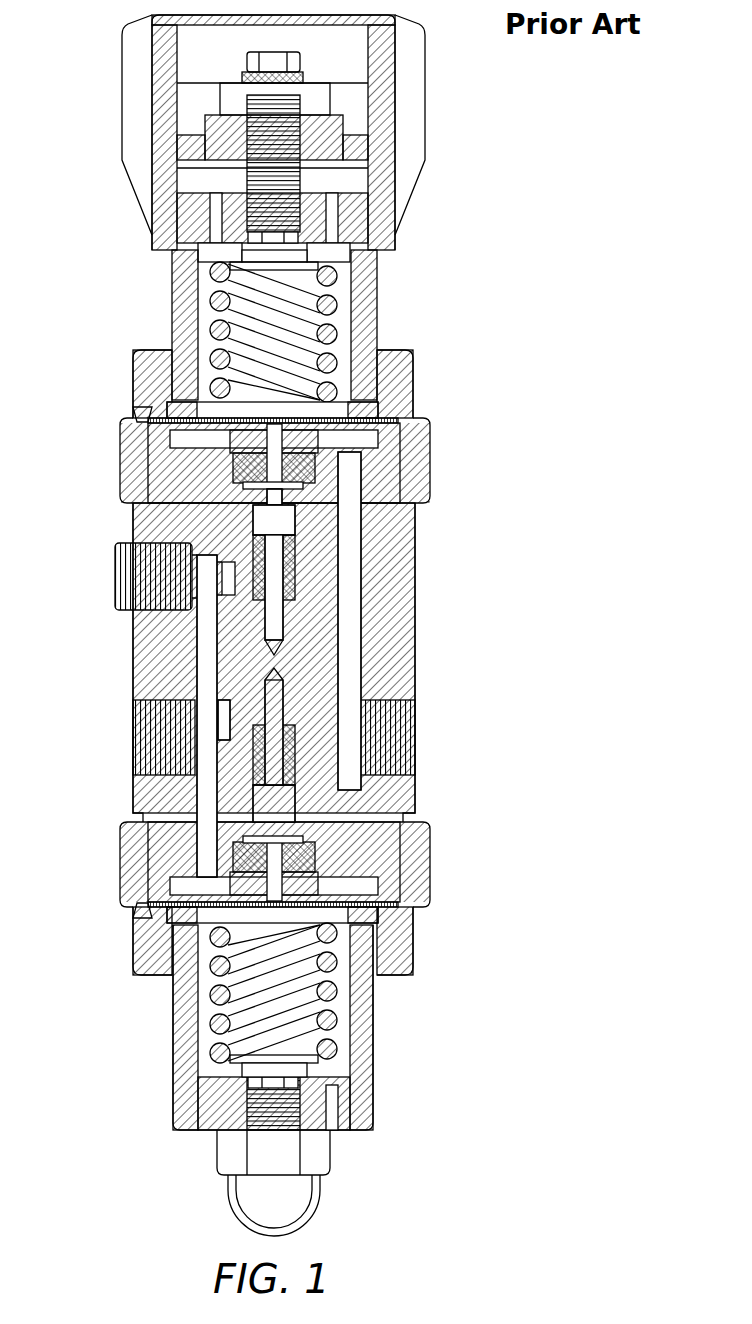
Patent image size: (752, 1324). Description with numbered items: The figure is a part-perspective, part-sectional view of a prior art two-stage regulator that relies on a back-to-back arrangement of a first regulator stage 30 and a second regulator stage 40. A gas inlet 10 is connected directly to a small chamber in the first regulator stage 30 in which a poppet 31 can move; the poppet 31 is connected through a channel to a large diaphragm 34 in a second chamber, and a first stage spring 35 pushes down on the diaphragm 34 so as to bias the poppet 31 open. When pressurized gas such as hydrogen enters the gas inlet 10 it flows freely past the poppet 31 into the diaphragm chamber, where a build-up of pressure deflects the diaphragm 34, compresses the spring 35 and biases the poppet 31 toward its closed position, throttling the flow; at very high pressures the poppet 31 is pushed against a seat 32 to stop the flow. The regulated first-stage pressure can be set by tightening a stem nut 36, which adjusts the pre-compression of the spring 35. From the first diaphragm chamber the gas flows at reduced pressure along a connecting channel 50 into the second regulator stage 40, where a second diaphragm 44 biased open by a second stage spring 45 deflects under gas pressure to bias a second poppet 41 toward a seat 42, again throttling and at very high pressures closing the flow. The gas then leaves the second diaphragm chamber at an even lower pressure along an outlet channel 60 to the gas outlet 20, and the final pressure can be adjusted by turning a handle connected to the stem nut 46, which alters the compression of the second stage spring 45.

The gas inlet 10 is at (133, 740).
The gas outlet 20 is at (415, 740).
The first regulator stage 30 is at (507, 775).
The poppet 31 is at (280, 807).
The seat 32 is at (333, 838).
The large diaphragm 34 is at (150, 903).
The first stage spring 35 is at (373, 1032).
The stem nut 36 is at (318, 1152).
The second regulator stage 40 is at (60, 12).
The poppet 41 is at (302, 530).
The seat 42 is at (125, 473).
The second diaphragm 44 is at (133, 410).
The second stage spring 45 is at (373, 322).
The stem nut 46 is at (228, 100).
The connecting channel 50 is at (203, 803).
The outlet channel 60 is at (353, 653).